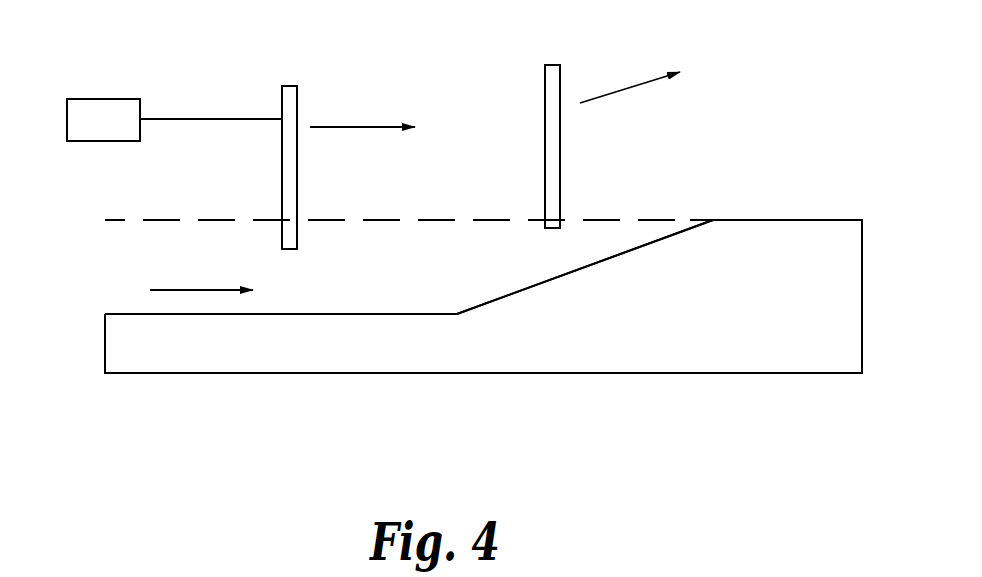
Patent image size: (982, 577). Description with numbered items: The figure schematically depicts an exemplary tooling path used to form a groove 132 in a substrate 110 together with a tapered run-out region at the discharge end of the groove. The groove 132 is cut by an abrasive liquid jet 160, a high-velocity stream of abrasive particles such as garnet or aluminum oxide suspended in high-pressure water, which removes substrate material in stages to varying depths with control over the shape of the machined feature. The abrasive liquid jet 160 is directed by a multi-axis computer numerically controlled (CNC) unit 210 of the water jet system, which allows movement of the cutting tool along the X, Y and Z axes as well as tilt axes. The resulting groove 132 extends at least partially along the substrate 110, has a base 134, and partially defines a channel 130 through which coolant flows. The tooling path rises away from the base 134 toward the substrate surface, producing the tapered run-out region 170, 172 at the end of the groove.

The substrate 110 is at (762, 355).
The channel 130 is at (395, 295).
The groove 132 is at (395, 295).
The base 134 is at (125, 314).
The abrasive liquid jet 160 is at (282, 103).
The transition region 170 is at (457, 314).
The sloped surface 172 is at (573, 250).
The multi-axis computer numerically controlled (CNC) unit 210 is at (174, 120).